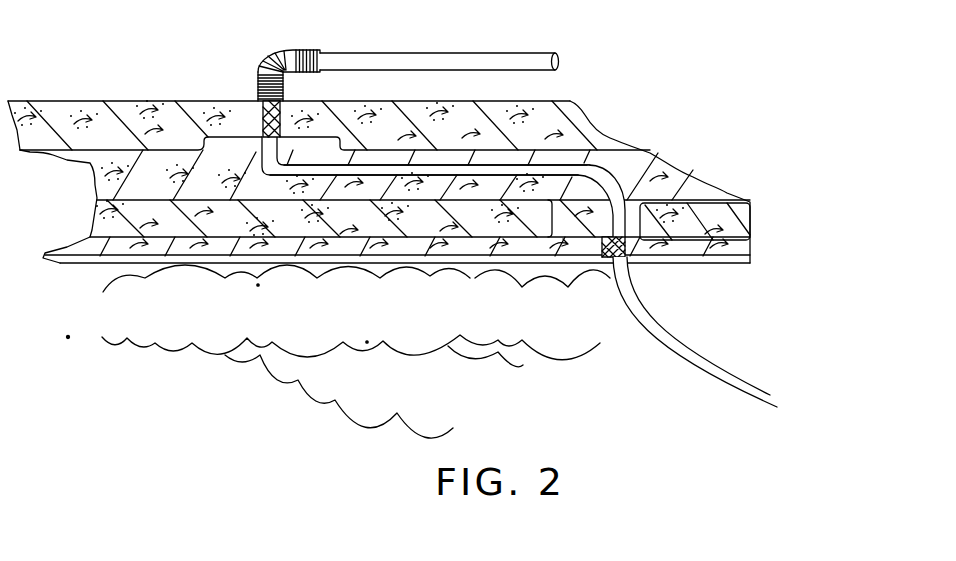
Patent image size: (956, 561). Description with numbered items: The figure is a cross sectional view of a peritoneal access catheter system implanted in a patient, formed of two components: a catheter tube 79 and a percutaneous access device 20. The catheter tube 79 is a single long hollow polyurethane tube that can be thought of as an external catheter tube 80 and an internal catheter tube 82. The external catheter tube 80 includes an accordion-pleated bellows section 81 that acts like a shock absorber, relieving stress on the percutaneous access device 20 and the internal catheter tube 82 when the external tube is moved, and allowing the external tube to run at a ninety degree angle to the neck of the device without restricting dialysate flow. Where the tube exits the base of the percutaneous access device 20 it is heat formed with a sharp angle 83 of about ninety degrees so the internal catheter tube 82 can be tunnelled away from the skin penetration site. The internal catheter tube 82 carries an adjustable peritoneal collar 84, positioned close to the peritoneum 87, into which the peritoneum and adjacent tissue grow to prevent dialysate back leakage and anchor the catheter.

The percutaneous access device 20 is at (258, 118).
The catheter tube 79 is at (412, 53).
The external catheter tube 80 is at (487, 52).
The bellows section 81 is at (293, 50).
The internal catheter tube 82 is at (630, 318).
The sharp angle 83 is at (277, 170).
The peritoneal collar 84 is at (632, 258).
The peritoneum 87 is at (734, 265).